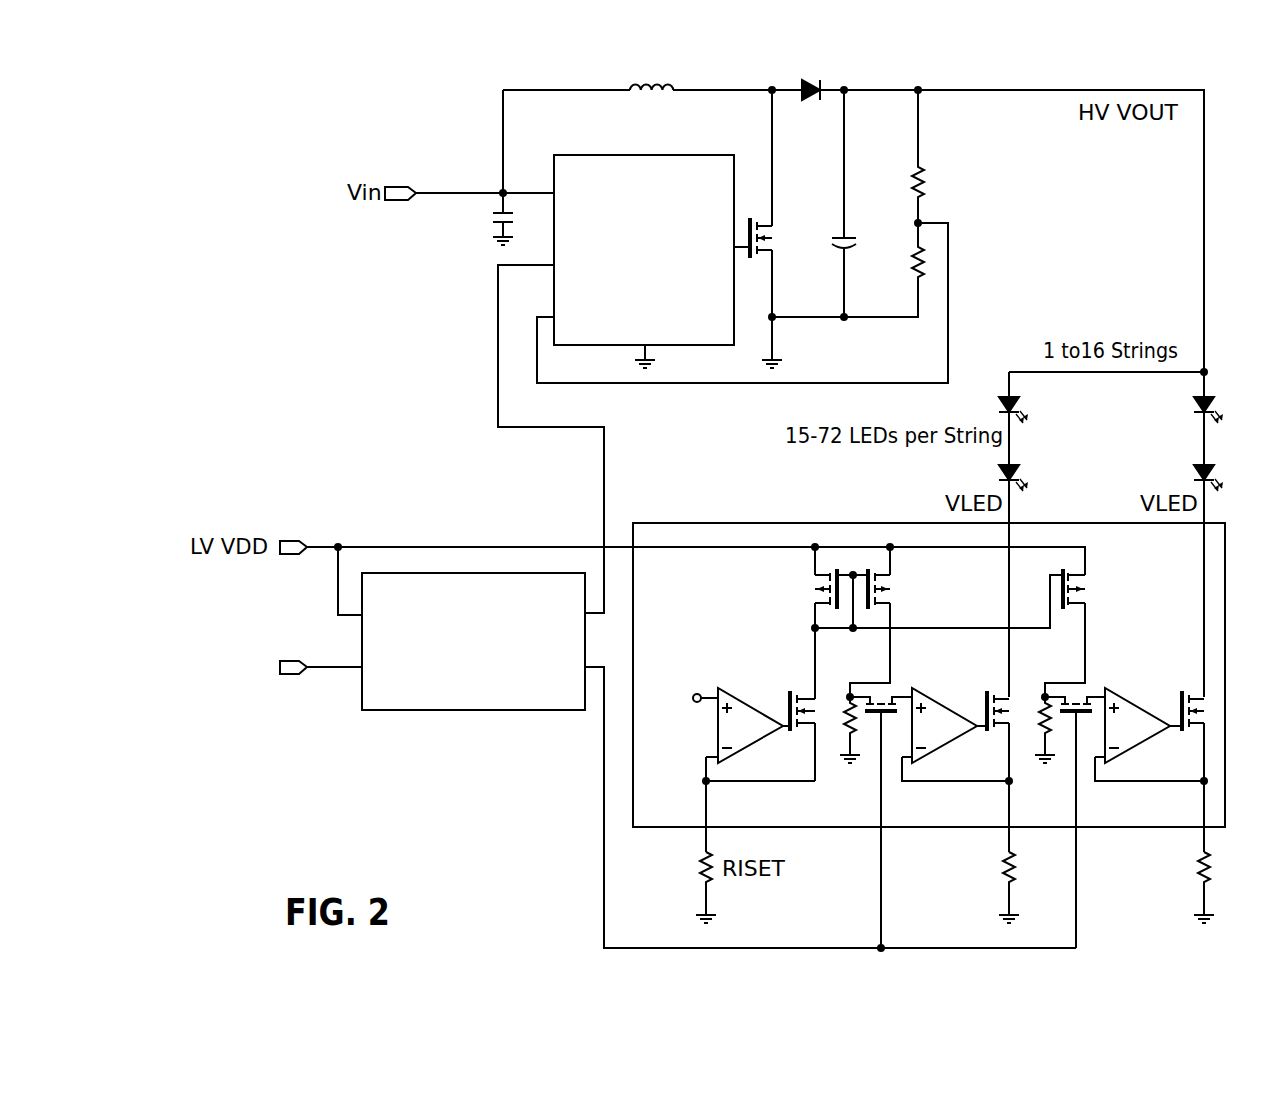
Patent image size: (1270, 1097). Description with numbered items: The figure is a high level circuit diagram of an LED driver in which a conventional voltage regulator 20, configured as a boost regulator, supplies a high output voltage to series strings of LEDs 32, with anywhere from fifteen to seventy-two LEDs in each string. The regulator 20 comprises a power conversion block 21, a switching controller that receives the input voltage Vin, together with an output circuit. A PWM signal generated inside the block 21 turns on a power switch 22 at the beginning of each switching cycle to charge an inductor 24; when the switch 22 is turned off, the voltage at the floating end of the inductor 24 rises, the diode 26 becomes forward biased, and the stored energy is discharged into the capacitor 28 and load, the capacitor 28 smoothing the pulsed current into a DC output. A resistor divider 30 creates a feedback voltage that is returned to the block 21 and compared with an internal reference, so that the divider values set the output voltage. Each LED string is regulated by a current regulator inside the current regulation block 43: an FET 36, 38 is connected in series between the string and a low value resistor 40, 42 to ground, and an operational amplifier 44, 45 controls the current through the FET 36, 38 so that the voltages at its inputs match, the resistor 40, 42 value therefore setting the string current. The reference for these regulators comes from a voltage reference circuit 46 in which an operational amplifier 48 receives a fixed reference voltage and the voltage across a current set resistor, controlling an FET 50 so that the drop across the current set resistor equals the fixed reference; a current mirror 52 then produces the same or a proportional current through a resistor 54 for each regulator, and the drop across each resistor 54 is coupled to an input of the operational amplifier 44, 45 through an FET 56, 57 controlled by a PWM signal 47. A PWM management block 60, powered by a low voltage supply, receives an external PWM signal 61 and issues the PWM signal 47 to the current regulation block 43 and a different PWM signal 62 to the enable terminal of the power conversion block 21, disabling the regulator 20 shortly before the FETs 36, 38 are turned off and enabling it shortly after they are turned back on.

The voltage regulator 20 is at (962, 70).
The power conversion block 21 is at (675, 203).
The power switch 22 is at (772, 230).
The inductor 24 is at (671, 85).
The diode 26 is at (800, 82).
The capacitor 28 is at (850, 232).
The resistor divider 30 is at (942, 180).
The LEDs 32 is at (1023, 399).
The FET 36 is at (995, 692).
The FET 38 is at (1190, 692).
The resistor 40 is at (999, 875).
The resistor 42 is at (1194, 875).
The current regulation block 43 is at (908, 522).
The operational amplifier 44 is at (928, 690).
The operational amplifier 45 is at (1120, 690).
The voltage reference circuit 46 is at (800, 593).
The PWM signal 47 is at (604, 835).
The operational amplifier 48 is at (735, 690).
The FET 50 is at (803, 692).
The current mirror 52 is at (912, 592).
The resistor 54 is at (856, 748).
The FET 56 is at (879, 697).
The FET 57 is at (1074, 697).
The PWM management block 60 is at (362, 689).
The PWM signal 61 is at (290, 660).
The PWM signal 62 is at (604, 468).